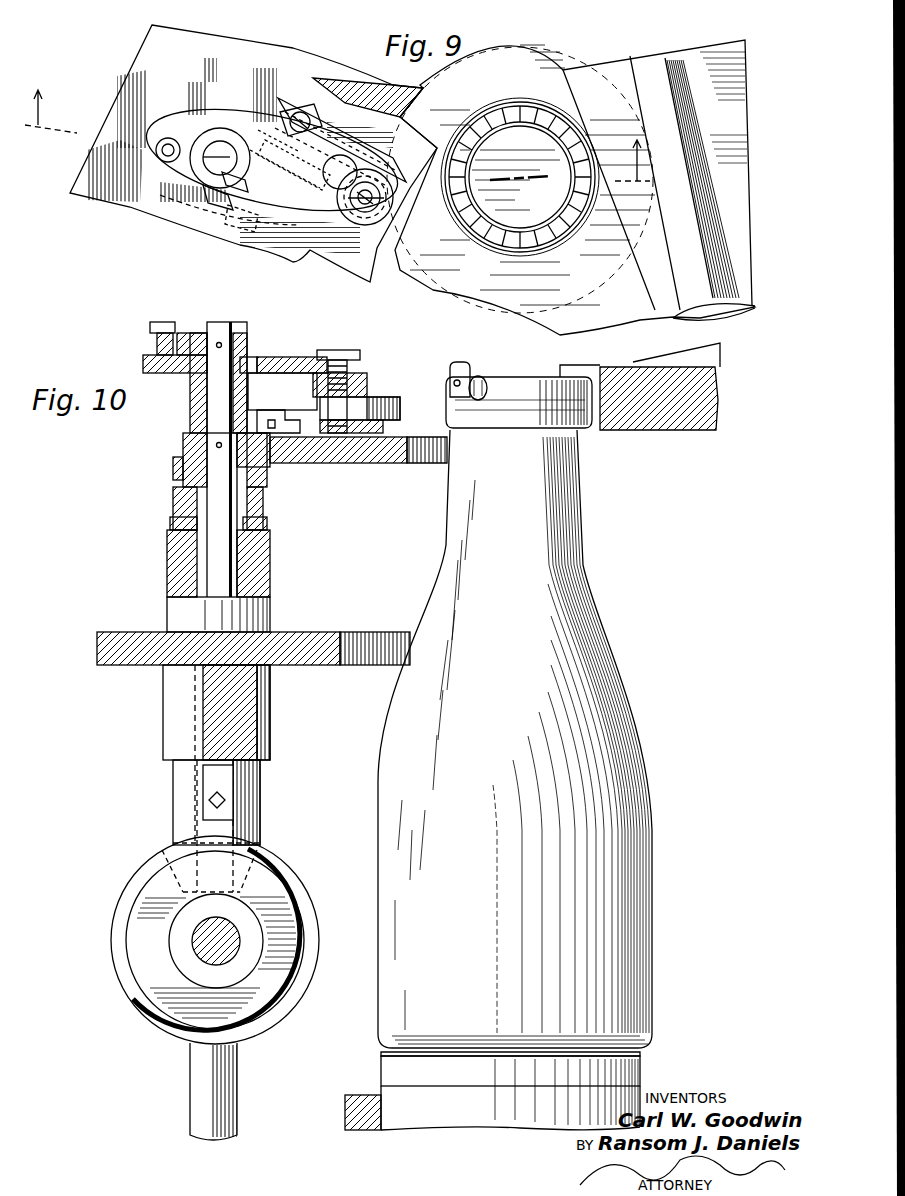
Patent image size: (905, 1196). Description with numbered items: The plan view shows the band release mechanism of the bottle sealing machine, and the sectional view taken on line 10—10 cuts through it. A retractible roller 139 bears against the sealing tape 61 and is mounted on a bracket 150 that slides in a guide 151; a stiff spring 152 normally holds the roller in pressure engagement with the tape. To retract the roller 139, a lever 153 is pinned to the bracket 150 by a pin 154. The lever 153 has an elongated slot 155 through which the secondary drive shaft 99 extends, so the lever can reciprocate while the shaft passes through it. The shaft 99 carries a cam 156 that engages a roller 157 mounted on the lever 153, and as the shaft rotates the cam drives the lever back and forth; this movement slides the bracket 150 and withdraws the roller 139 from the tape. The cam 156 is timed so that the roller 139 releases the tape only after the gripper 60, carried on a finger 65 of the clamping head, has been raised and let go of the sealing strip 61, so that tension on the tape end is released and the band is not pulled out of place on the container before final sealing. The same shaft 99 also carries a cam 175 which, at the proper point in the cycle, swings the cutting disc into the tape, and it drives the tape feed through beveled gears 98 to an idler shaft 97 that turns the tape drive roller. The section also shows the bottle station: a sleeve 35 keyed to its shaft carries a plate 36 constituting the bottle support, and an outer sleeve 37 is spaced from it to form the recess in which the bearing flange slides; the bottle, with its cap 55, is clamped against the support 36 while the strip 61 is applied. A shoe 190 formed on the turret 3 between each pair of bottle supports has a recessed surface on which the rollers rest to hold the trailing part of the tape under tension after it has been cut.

In FIG. 9, the turret 3 is at (765, 283).
In FIG. 10, the turret 3 is at (730, 422).
In FIG. 9, the section line 10— 10 is at (336, 121).
In FIG. 10, the sleeve 35 is at (383, 1072).
In FIG. 10, the plate 36 is at (383, 1052).
In FIG. 10, the outer sleeve 37 is at (410, 1117).
In FIG. 9, the cap 55 is at (540, 226).
In FIG. 9, the gripper 60 is at (480, 234).
In FIG. 10, the gripper 60 is at (479, 376).
In FIG. 9, the sealing strip 61 is at (470, 205).
In FIG. 10, the sealing strip 61 is at (513, 400).
In FIG. 9, the finger 65 is at (468, 228).
In FIG. 10, the finger 65 is at (466, 364).
In FIG. 10, the idler shaft 97 is at (200, 953).
In FIG. 10, the beveled gears 98 is at (262, 880).
In FIG. 9, the secondary drive shaft 99 is at (220, 156).
In FIG. 10, the secondary drive shaft 99 is at (230, 1095).
In FIG. 9, the retractible roller 139 is at (385, 212).
In FIG. 10, the retractible roller 139 is at (386, 397).
In FIG. 9, the bracket 150 is at (370, 175).
In FIG. 10, the bracket 150 is at (381, 385).
In FIG. 9, the guide 151 is at (290, 115).
In FIG. 9, the stiff spring 152 is at (318, 182).
In FIG. 9, the lever 153 is at (210, 188).
In FIG. 10, the lever 153 is at (296, 364).
In FIG. 9, the pin 154 is at (337, 205).
In FIG. 10, the pin 154 is at (346, 360).
In FIG. 9, the elongated slot 155 is at (217, 192).
In FIG. 10, the elongated slot 155 is at (250, 362).
In FIG. 9, the cam 156 is at (185, 172).
In FIG. 10, the cam 156 is at (196, 335).
In FIG. 9, the roller 157 is at (160, 158).
In FIG. 10, the roller 157 is at (152, 345).
In FIG. 9, the cam 175 is at (247, 208).
In FIG. 10, the cam 175 is at (173, 467).
In FIG. 9, the shoe 190 is at (692, 55).